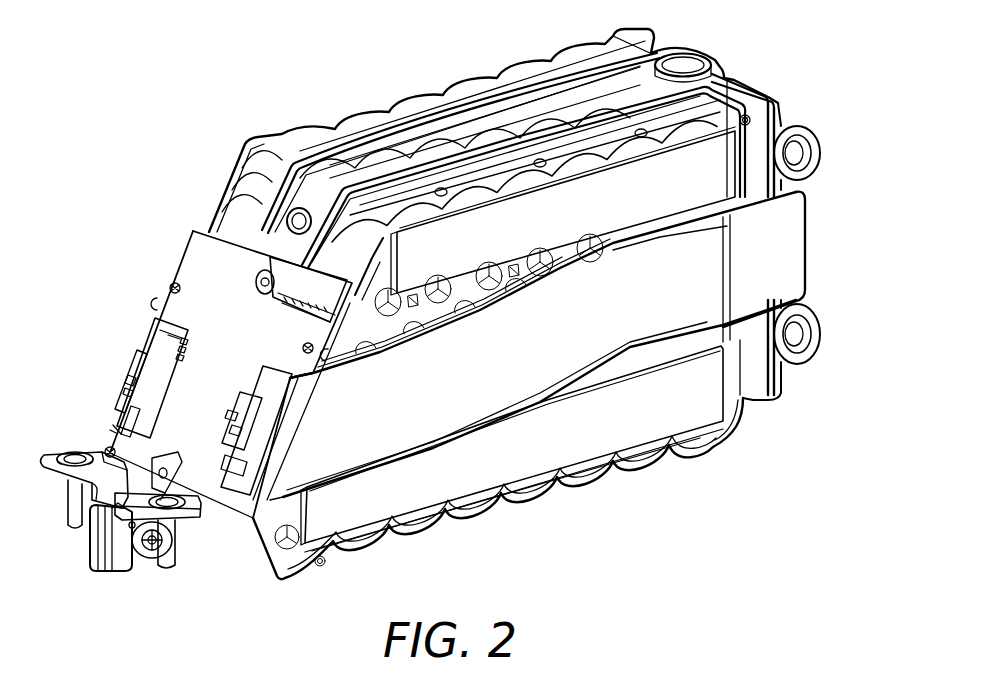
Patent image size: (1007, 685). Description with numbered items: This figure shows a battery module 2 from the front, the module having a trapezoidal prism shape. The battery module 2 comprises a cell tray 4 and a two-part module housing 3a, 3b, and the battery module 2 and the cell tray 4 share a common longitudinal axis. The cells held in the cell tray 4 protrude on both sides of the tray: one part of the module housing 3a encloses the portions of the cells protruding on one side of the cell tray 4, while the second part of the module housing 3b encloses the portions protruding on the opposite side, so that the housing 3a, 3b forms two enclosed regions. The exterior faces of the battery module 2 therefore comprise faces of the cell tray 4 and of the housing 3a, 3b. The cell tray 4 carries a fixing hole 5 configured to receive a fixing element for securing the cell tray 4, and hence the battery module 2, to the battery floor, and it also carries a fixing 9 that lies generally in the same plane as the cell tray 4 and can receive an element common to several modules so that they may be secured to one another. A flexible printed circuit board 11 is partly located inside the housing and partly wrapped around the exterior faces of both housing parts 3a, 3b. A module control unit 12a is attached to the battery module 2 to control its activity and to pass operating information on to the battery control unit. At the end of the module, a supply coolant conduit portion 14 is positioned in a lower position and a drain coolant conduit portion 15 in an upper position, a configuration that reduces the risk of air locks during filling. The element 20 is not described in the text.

The battery module 2 is at (129, 592).
The module housing part 3a is at (490, 180).
The module housing part 3b is at (322, 121).
The cell tray 4 is at (530, 100).
The fixing hole 5 is at (683, 60).
The fixing 9 is at (243, 197).
The flexible printed circuit board 11 is at (400, 433).
The module control unit 12a is at (197, 390).
The supply coolant conduit portion 14 is at (806, 337).
The drain coolant conduit portion 15 is at (806, 150).
The holder / bracket 20 is at (87, 545).